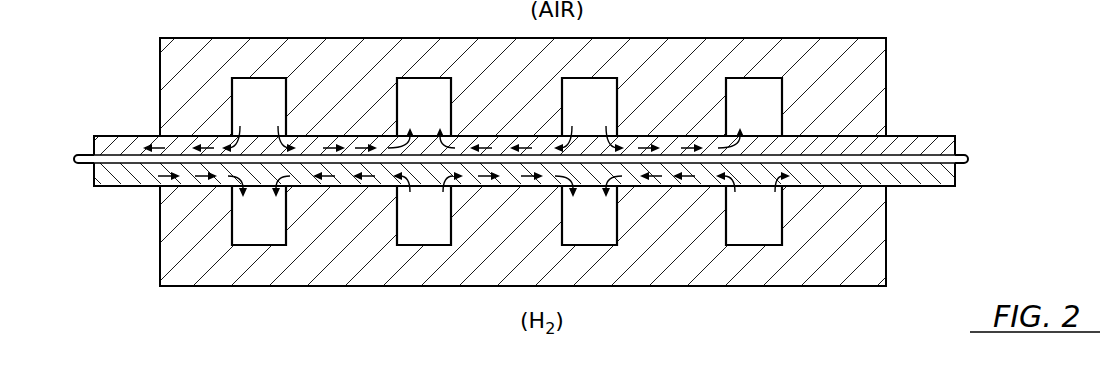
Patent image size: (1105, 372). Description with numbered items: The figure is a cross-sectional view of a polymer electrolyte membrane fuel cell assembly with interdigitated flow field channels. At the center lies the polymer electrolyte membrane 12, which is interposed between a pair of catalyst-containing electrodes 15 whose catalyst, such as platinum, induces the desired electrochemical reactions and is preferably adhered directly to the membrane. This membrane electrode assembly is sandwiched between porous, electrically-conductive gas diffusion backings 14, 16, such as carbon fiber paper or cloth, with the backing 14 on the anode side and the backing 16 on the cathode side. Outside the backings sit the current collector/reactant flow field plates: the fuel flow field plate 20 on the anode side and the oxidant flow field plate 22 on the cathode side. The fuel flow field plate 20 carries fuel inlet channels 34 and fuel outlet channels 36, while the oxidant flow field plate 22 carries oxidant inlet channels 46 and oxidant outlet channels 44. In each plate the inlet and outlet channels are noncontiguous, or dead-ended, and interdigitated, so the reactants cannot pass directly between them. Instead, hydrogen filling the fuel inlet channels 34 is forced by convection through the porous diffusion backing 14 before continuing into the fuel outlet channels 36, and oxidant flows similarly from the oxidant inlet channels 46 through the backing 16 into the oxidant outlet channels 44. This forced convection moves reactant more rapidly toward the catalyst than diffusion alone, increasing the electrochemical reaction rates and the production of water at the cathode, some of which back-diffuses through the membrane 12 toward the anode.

The polymer electrolyte membrane 12 is at (972, 160).
The gas diffusion backing 14 is at (945, 182).
The electrode 15 is at (962, 150).
The gas diffusion backing 16 is at (943, 148).
The fuel flow field plate 20 is at (854, 288).
The oxidant flow field plate 22 is at (867, 38).
The fuel inlet channels 34 is at (418, 232).
The fuel outlet channels 36 is at (255, 233).
The oxidant outlet channels 44 is at (432, 97).
The oxidant inlet channels 46 is at (270, 90).